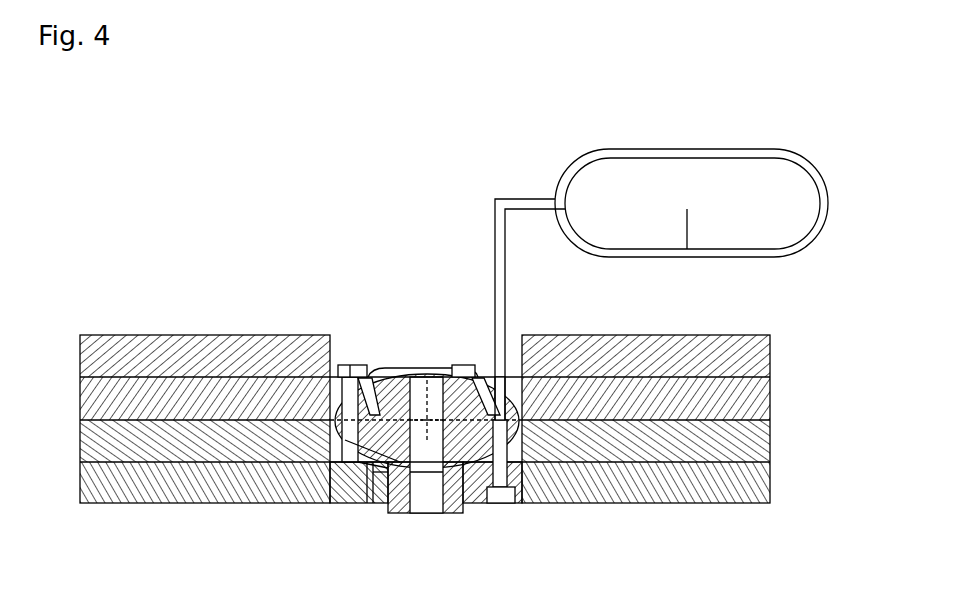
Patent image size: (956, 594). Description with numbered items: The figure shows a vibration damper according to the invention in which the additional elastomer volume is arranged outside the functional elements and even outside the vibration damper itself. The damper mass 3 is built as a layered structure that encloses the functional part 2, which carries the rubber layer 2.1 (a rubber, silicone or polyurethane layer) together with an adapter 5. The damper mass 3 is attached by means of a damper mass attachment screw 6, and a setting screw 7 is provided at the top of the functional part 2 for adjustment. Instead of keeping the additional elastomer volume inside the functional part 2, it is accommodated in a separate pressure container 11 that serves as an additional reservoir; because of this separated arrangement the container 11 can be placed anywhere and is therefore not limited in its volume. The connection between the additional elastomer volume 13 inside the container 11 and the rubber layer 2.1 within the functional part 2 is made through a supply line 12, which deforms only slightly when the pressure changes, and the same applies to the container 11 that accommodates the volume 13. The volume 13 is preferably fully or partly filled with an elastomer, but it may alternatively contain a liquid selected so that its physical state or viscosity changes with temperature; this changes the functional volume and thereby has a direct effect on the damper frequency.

The functional part 2 is at (426, 425).
The rubber layer 2.1 is at (429, 424).
The damper mass 3 is at (80, 483).
The adapter 5 is at (388, 468).
The damper mass attachment screw 6 is at (502, 508).
The setting screw 7 is at (353, 341).
The separate pressure container 11 is at (691, 190).
The supply line 12 is at (495, 257).
The additional elastomer volume 13 is at (675, 249).